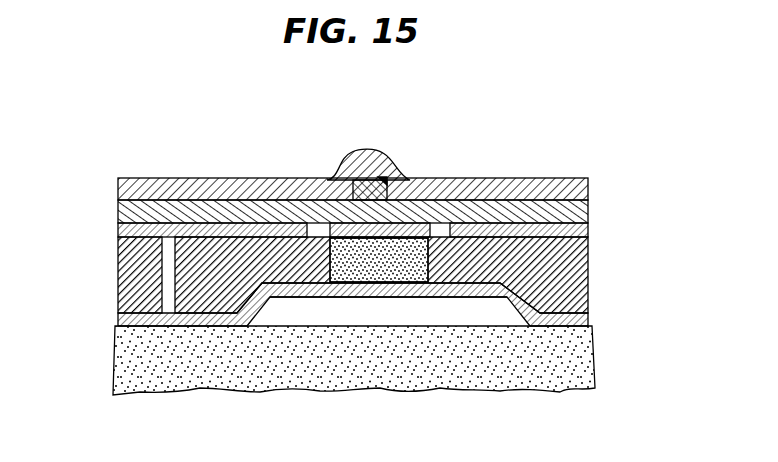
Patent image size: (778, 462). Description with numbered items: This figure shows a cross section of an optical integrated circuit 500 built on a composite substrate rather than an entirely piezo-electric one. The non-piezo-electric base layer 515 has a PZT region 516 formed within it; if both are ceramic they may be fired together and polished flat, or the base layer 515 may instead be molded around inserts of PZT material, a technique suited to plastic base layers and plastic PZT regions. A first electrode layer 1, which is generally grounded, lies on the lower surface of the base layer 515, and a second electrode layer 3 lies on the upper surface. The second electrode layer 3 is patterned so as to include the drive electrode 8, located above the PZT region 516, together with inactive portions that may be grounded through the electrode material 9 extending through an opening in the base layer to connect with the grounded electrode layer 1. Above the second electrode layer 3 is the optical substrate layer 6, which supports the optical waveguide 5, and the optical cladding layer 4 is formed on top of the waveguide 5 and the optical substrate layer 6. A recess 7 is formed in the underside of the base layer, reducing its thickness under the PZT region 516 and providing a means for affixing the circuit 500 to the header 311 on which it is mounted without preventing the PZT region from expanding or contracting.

The optical integrated circuit 500 is at (192, 126).
The header 311 is at (354, 360).
The recess 7 is at (482, 313).
The first electrode layer 1 is at (590, 313).
The non-piezo-electric base layer 515 is at (590, 268).
The PZT region 516 is at (388, 265).
The electrode material 9 is at (118, 272).
The second electrode layer 3 is at (118, 228).
The optical substrate layer 6 is at (590, 203).
The optical cladding layer 4 is at (460, 180).
The optical waveguide 5 is at (387, 167).
The drive electrode 8 is at (330, 182).